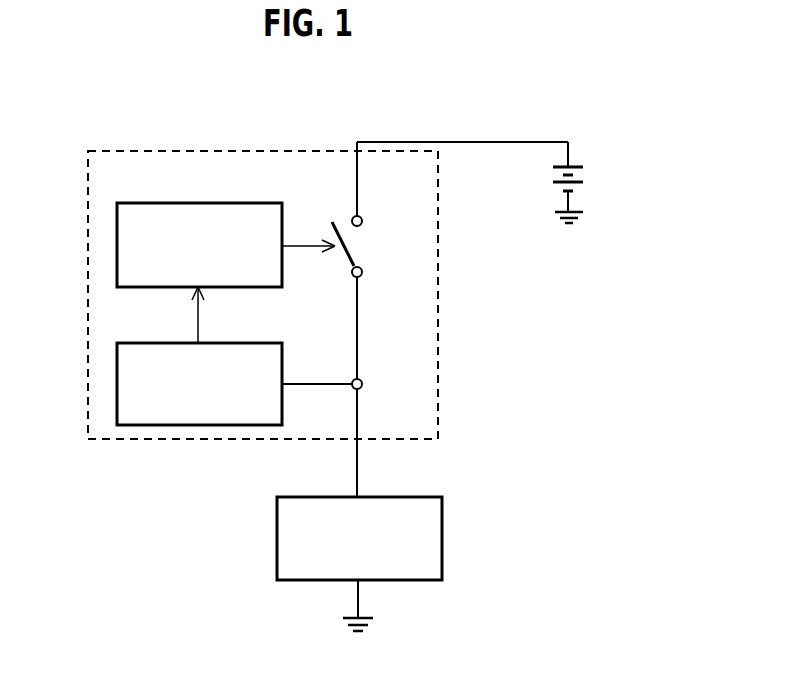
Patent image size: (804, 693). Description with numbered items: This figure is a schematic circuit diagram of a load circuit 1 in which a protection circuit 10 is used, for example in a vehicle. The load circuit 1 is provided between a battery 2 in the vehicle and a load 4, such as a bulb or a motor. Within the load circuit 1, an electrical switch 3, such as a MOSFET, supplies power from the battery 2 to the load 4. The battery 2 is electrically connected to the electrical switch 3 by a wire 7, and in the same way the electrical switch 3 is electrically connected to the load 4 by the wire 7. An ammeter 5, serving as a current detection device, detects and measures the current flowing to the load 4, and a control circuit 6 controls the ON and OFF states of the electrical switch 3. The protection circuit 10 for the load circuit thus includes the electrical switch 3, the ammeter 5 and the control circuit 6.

The load circuit 1 is at (520, 127).
The battery 2 is at (578, 178).
The electrical switch 3 is at (360, 248).
The load 4 is at (442, 545).
The ammeter 5 is at (233, 342).
The control circuit 6 is at (235, 202).
The wire 7 is at (473, 142).
The protection circuit 10 is at (188, 150).